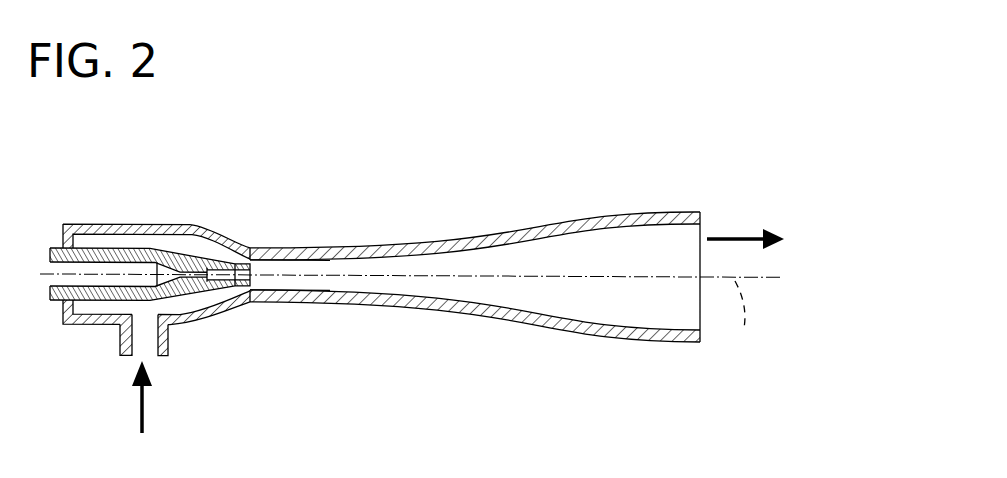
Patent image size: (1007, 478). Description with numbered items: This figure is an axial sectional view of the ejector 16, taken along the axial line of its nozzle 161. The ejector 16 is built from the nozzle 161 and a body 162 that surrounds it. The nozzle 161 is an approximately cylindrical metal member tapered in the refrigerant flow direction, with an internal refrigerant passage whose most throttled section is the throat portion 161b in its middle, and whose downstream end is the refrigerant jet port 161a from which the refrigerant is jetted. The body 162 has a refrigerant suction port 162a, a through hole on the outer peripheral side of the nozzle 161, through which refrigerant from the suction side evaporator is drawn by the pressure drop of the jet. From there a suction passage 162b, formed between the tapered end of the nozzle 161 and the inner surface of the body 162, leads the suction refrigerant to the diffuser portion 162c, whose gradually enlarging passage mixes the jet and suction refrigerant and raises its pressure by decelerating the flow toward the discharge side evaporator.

The ejector 16 is at (504, 175).
The nozzle 161 is at (195, 252).
The refrigerant jet port 161a is at (270, 262).
The throat portion 161b is at (128, 247).
The body 162 is at (530, 228).
The refrigerant suction port 162a is at (131, 353).
The suction passage 162b is at (218, 303).
The diffuser portion 162c is at (458, 270).